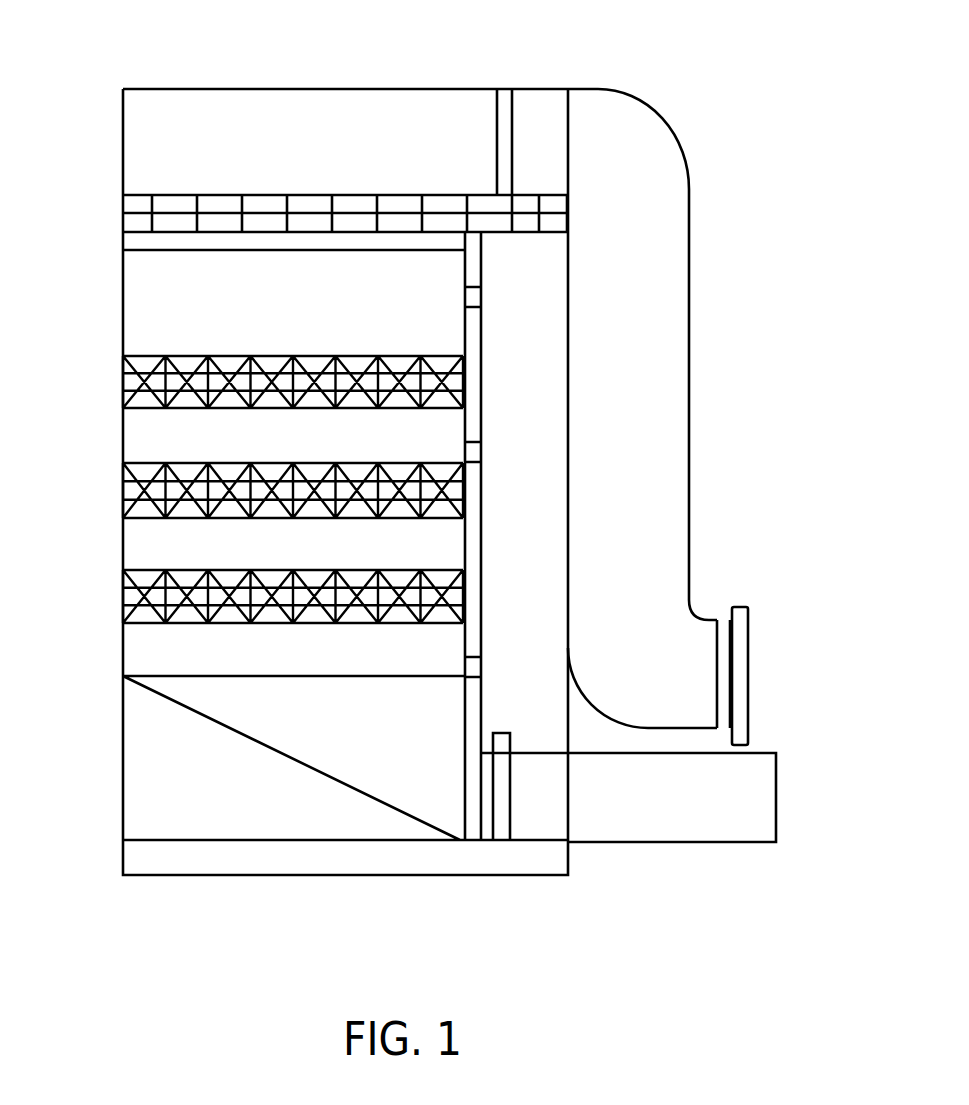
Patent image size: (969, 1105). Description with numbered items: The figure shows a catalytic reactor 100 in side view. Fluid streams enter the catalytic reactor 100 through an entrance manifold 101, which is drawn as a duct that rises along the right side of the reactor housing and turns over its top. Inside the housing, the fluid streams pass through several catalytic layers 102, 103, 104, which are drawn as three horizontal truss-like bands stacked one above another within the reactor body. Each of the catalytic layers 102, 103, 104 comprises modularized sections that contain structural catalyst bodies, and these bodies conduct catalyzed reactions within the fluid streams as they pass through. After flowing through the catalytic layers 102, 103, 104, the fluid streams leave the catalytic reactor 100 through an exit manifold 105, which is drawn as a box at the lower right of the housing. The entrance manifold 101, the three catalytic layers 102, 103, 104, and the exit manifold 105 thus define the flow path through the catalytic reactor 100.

The catalytic reactor 100 is at (727, 143).
The entrance manifold 101 is at (750, 688).
The catalytic layer 102 is at (123, 392).
The catalytic layer 103 is at (123, 497).
The catalytic layer 104 is at (123, 605).
The exit manifold 105 is at (776, 803).